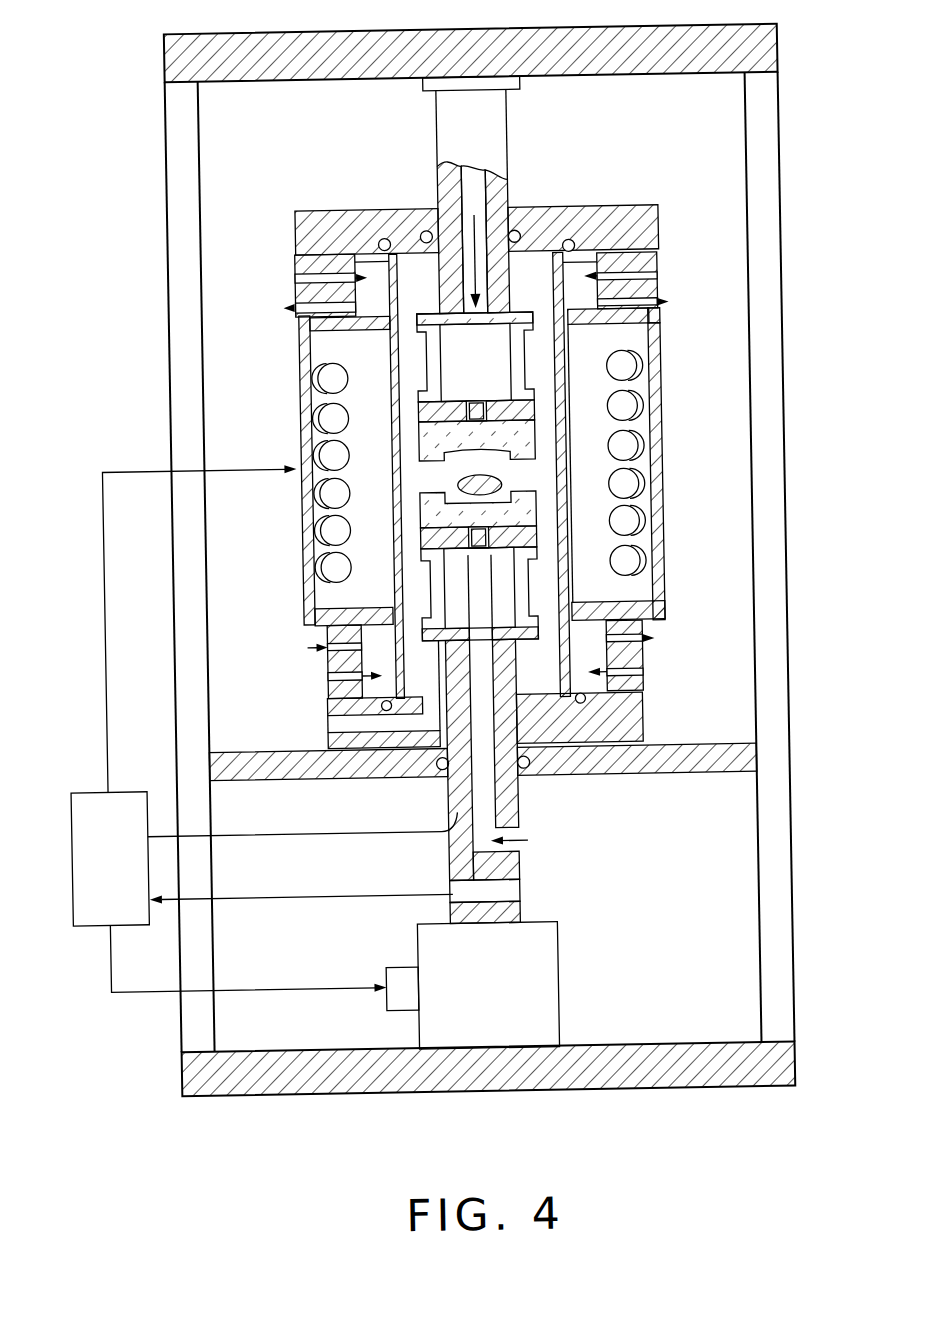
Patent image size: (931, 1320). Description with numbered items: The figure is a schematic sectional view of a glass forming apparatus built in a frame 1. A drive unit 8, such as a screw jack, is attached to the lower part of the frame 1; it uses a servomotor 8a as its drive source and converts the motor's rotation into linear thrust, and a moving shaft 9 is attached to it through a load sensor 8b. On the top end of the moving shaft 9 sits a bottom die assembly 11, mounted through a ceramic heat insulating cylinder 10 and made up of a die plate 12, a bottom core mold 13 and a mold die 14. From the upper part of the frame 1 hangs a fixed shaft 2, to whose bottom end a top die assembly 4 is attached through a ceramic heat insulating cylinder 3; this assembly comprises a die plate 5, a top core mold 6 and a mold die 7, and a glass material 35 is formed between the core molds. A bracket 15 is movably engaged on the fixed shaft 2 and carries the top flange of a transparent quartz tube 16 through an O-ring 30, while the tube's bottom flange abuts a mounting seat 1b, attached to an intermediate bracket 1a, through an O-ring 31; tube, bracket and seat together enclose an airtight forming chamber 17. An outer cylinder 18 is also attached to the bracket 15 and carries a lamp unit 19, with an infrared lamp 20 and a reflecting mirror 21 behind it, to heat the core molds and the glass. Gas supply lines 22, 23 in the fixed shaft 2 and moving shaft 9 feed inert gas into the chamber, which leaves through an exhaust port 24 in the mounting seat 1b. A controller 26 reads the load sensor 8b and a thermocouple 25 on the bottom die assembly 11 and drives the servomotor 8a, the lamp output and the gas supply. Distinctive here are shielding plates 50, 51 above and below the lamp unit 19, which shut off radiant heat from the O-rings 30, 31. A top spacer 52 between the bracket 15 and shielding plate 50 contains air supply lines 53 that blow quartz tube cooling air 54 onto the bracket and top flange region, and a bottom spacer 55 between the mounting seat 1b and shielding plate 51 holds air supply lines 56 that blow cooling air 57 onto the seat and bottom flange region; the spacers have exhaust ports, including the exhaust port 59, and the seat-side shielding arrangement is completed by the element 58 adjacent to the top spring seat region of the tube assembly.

The frame 1 is at (172, 141).
The intermediate bracket 1a is at (737, 750).
The mounting seat 1b is at (640, 716).
The fixed shaft 2 is at (515, 136).
The heat insulating cylinder 3 is at (443, 370).
The top die assembly 4 is at (410, 412).
The die plate 5 is at (590, 408).
The top core mold 6 is at (540, 502).
The mold die 7 is at (540, 458).
The drive unit 8 is at (550, 1006).
The servomotor 8a is at (397, 974).
The load sensor 8b is at (514, 895).
The moving shaft 9 is at (514, 807).
The heat insulating cylinder 10 is at (313, 610).
The bottom die assembly 11 is at (408, 512).
The die plate 12 is at (610, 587).
The bottom core mold 13 is at (393, 500).
The mold die 14 is at (590, 523).
The bracket 15 is at (300, 233).
The transparent quartz tube 16 is at (302, 452).
The forming chamber 17 is at (533, 612).
The outer cylinder 18 is at (302, 377).
The lamp unit 19 is at (660, 380).
The infrared lamp 20 is at (636, 322).
The reflecting mirror 21 is at (656, 335).
The gas supply line 22 is at (493, 178).
The gas supply line 23 is at (522, 842).
The exhaust port 24 is at (331, 722).
The thermocouple 25 is at (470, 562).
The controller 26 is at (128, 786).
The O-ring 30 is at (360, 210).
The O-ring 31 is at (340, 705).
The glass material 35 is at (502, 487).
The shielding plate 50 is at (672, 305).
The shielding plate 51 is at (663, 614).
The top spacer 52 is at (299, 263).
The air supply lines 53 is at (299, 276).
The quartz tube cooling air 54 is at (287, 305).
The bottom spacer 55 is at (652, 641).
The air supply lines 56 is at (640, 690).
The quartz tube cooling air 57 is at (640, 668).
The left upper spring seat 58 is at (313, 322).
The exhaust port 59 is at (325, 650).